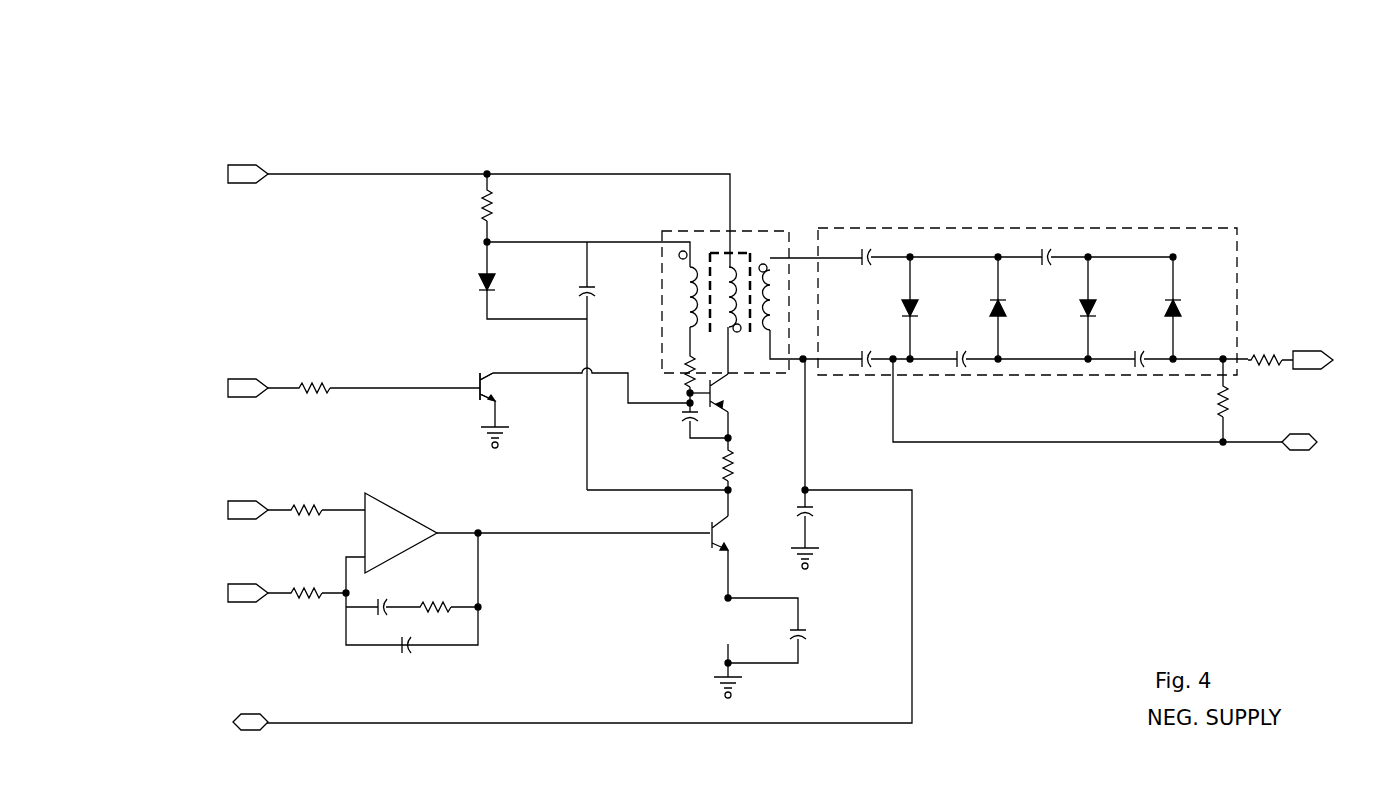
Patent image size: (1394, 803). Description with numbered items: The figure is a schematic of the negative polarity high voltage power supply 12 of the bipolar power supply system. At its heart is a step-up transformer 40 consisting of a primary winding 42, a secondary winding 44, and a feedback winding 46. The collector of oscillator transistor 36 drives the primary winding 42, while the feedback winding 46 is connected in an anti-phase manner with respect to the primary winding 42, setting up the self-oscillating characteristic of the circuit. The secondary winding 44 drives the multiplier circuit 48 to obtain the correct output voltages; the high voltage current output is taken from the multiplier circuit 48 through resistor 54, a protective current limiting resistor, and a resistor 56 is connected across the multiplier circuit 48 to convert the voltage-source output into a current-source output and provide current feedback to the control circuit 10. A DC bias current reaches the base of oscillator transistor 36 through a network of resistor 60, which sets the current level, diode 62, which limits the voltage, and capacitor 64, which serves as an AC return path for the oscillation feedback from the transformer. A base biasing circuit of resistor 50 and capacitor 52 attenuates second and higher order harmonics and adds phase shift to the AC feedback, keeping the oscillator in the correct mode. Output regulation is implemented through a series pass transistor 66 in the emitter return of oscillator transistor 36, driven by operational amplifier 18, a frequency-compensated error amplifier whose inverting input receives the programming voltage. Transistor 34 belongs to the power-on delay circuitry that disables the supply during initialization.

The control circuit 10 is at (714, 435).
The negative polarity high voltage power supply 12 is at (1112, 180).
The operational amplifier 18 is at (397, 558).
The transistor 34 is at (497, 392).
The oscillator transistor 36 is at (717, 393).
The step-up transformer 40 is at (709, 237).
The primary winding 42 is at (735, 300).
The secondary winding 44 is at (773, 298).
The feedback winding 46 is at (690, 298).
The multiplier circuit 48 is at (1200, 227).
The resistor 50 is at (690, 356).
The capacitor 52 is at (683, 416).
The resistor 54 is at (1262, 365).
The resistor 56 is at (1223, 410).
The resistor 60 is at (487, 199).
The diode 62 is at (487, 288).
The capacitor 64 is at (586, 295).
The series pass transistor 66 is at (714, 533).